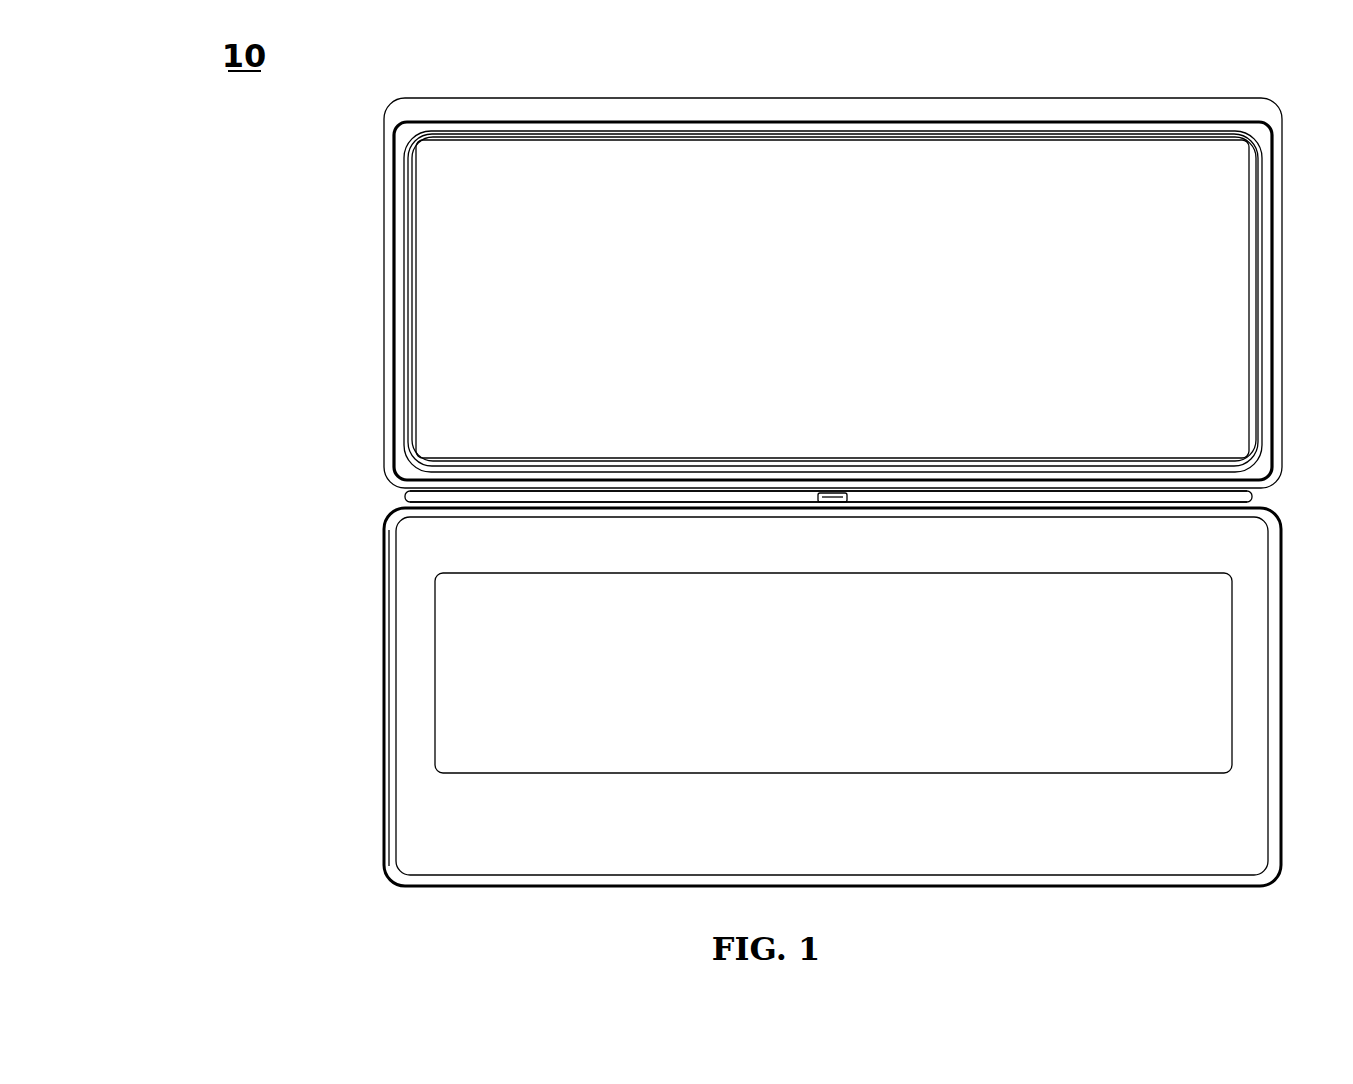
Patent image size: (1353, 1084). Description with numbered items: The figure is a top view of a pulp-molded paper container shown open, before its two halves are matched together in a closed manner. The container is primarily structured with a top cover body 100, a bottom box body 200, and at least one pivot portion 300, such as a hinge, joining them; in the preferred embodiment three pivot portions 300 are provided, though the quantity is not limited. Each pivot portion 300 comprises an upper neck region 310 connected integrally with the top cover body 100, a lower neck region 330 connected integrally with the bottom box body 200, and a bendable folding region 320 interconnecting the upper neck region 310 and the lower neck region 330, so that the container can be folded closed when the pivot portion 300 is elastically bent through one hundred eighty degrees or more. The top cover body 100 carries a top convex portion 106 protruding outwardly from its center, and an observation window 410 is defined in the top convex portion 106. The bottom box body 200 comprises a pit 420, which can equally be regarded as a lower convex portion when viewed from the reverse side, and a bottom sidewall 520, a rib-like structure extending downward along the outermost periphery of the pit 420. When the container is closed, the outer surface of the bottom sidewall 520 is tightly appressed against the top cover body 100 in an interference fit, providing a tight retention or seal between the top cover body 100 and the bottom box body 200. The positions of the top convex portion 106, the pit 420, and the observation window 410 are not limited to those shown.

The top cover body 100 is at (383, 810).
The top convex portion 106 is at (413, 622).
The bottom box body 200 is at (383, 297).
The pivot portion 300 is at (685, 500).
The upper neck region 310 is at (210, 498).
The bendable folding region 320 is at (482, 500).
The lower neck region 330 is at (210, 498).
The observation window 410 is at (470, 687).
The pit 420 is at (448, 348).
The bottom sidewall 520 is at (417, 410).